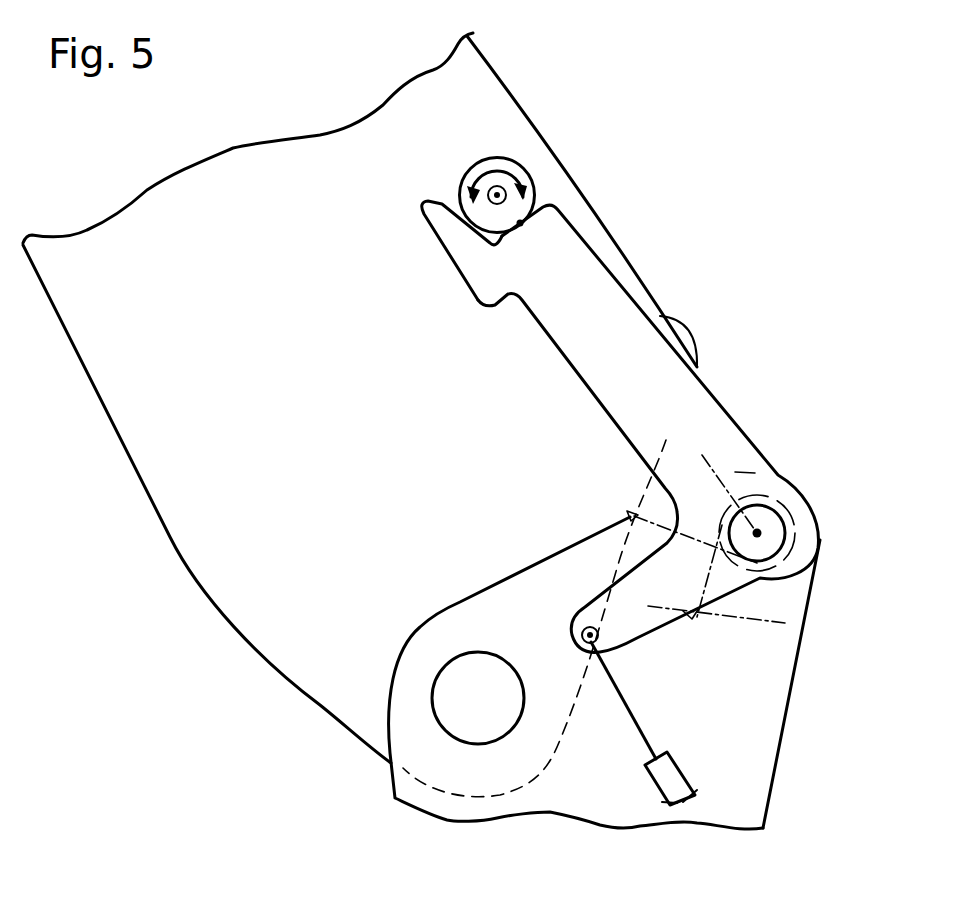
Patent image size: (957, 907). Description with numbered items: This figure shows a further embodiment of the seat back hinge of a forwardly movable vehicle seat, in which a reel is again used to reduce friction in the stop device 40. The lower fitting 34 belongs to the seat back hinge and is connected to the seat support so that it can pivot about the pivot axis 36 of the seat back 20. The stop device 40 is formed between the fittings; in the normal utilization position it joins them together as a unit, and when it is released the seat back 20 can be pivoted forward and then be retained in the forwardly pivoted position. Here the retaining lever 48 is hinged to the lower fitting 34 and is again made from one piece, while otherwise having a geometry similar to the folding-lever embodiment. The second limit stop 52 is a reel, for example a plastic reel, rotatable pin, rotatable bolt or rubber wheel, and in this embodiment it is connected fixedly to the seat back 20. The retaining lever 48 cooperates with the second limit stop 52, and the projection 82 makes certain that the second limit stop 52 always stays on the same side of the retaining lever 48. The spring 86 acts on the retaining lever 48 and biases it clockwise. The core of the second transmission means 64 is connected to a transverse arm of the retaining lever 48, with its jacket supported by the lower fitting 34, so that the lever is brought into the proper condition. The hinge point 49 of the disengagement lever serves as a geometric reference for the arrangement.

The seat back 20 is at (197, 497).
The lower fitting 34 is at (737, 719).
The pivot axis 36 is at (470, 715).
The stop device 40 is at (609, 208).
The retaining lever 48 is at (621, 337).
The hinge point 49 is at (757, 533).
The second limit stop 52 is at (493, 158).
The second transmission means 64 is at (663, 780).
The projection 82 is at (424, 206).
The spring 86 is at (798, 633).